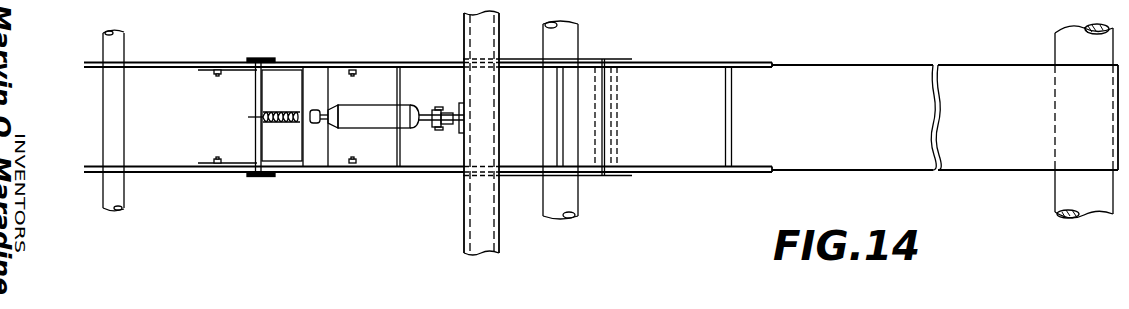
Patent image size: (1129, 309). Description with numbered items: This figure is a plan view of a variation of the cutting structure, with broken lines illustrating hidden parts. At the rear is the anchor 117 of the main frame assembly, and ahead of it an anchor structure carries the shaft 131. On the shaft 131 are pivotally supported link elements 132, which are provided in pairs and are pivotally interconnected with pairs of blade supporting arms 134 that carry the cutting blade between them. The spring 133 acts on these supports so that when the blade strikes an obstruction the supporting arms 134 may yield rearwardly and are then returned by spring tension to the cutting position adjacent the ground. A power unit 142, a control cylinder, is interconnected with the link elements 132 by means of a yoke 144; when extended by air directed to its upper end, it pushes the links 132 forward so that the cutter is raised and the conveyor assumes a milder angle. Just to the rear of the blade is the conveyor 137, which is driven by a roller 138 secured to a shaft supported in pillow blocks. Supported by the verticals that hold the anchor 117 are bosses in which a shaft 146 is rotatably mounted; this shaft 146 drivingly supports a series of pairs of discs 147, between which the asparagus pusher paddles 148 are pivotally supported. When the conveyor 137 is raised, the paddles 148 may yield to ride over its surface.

The anchor 117 is at (485, 233).
The shaft 131 is at (111, 104).
The link element 132 is at (162, 165).
The spring 133 is at (276, 123).
The blade supporting arm 134 is at (378, 175).
The conveyor 137 is at (878, 75).
The roller 138 is at (1062, 37).
The power unit 142 is at (347, 108).
The yoke 144 is at (314, 75).
The shaft 146 is at (567, 197).
The disc 147 is at (686, 171).
The pusher paddle 148 is at (733, 114).